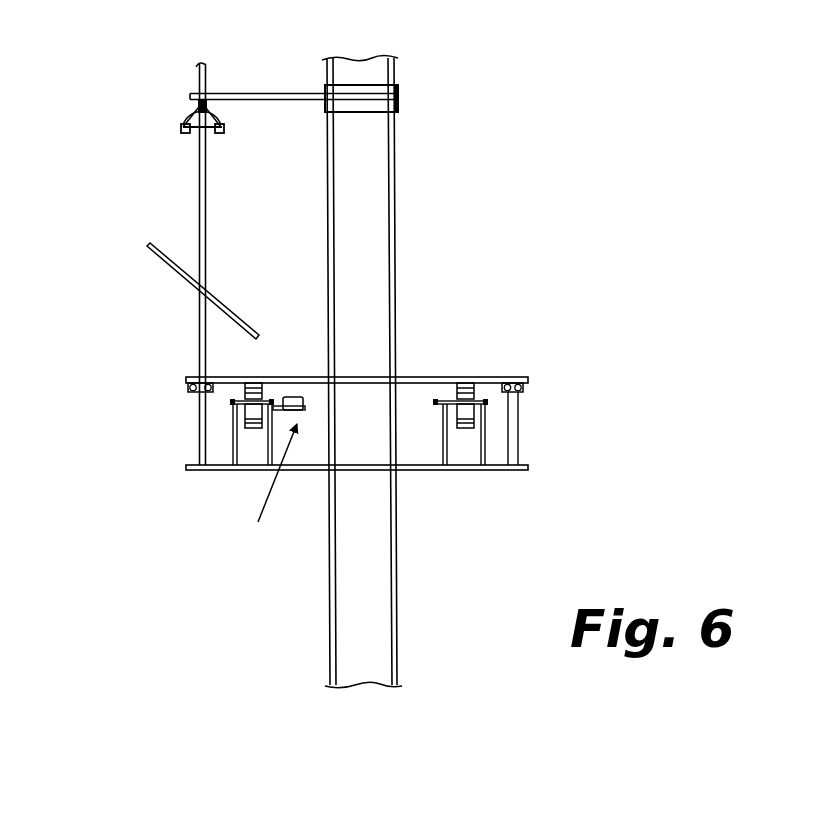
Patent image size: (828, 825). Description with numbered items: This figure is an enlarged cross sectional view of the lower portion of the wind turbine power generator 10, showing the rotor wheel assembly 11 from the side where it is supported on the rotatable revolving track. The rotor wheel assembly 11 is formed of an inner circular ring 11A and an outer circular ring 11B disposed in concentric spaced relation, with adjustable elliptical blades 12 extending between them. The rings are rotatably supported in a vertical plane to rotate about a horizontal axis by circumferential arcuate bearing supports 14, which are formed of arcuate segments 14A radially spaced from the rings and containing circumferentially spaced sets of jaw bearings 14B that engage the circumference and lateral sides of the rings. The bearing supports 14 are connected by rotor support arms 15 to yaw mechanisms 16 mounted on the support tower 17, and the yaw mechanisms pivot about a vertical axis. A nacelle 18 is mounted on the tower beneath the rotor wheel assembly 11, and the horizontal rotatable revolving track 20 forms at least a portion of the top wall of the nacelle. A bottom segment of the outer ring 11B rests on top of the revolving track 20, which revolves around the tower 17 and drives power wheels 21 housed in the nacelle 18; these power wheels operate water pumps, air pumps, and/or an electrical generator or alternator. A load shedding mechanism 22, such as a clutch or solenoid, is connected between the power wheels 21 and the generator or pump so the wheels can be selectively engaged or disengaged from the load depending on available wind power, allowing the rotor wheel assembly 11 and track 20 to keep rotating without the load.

The wind turbine power generator 10 is at (500, 212).
The rotor wheel assembly 11 is at (120, 308).
The inner circular ring 11A is at (199, 140).
The outer circular ring 11B is at (198, 375).
The adjustable elliptical blades 12 is at (212, 298).
The circumferential arcuate bearing supports 14 is at (187, 117).
The arcuate segments 14A is at (166, 105).
The jaw bearings 14B is at (186, 118).
The rotor support arms 15 is at (260, 93).
The yaw mechanisms 16 is at (370, 112).
The support tower 17 is at (397, 313).
The nacelle 18 is at (563, 409).
The horizontal rotatable revolving track 20 is at (501, 375).
The power wheels 21 is at (243, 424).
The load shedding mechanism 22 is at (246, 405).